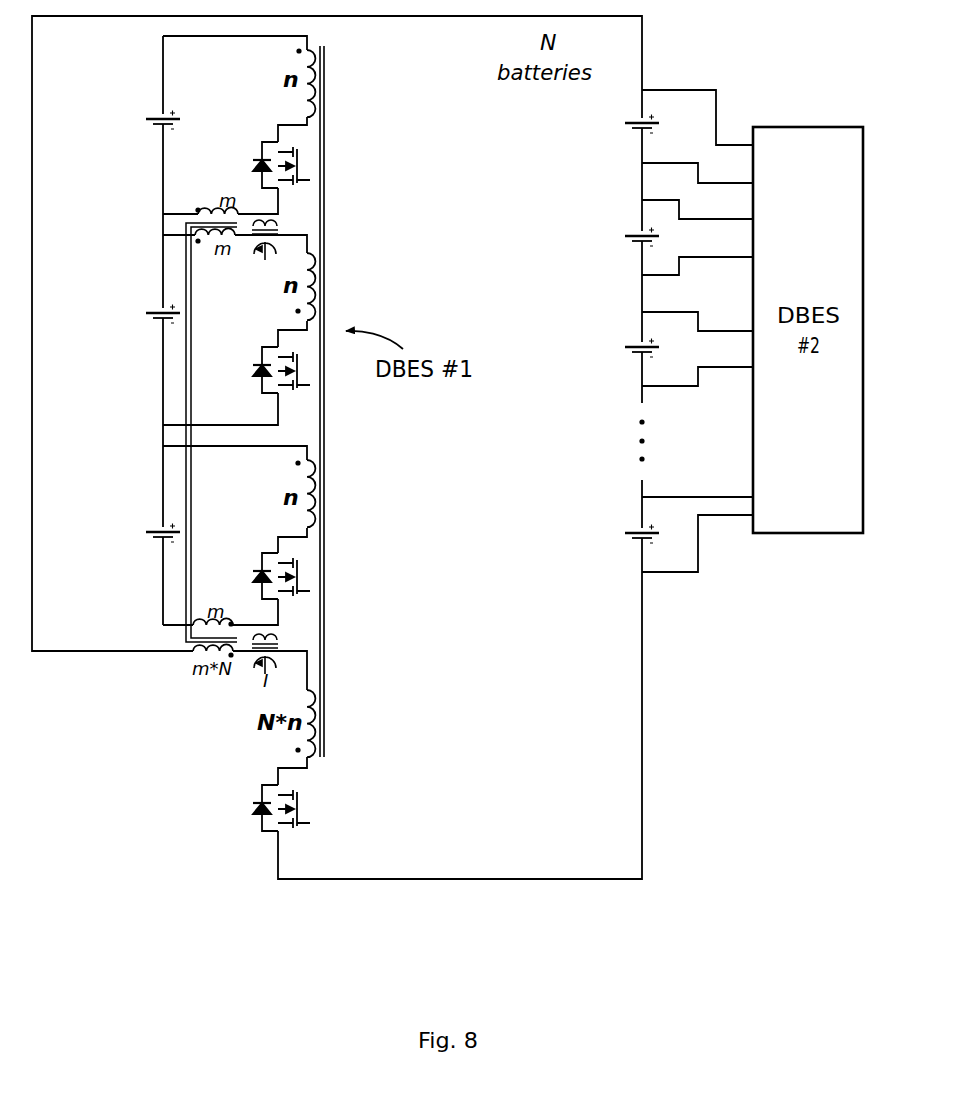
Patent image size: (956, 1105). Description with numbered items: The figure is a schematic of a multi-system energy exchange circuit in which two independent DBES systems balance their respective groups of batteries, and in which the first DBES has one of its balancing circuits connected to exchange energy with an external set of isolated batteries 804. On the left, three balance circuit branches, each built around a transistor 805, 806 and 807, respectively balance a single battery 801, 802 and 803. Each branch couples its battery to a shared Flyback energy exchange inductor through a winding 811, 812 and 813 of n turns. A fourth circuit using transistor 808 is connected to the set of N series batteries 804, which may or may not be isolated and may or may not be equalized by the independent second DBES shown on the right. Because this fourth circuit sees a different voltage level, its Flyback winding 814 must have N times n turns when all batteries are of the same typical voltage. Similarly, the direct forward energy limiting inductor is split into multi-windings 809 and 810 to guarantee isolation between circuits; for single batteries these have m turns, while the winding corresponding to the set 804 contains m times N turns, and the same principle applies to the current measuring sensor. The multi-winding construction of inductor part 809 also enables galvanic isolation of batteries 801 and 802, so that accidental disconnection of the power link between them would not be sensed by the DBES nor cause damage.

The battery 801 is at (140, 118).
The battery 802 is at (140, 312).
The battery 803 is at (140, 531).
The set of isolated batteries 804 is at (606, 162).
The transistor 805 is at (268, 130).
The transistor 806 is at (258, 338).
The transistor 807 is at (268, 545).
The transistor 808 is at (309, 806).
The multi-winding of direct forward energy limiting inductor 809 is at (206, 206).
The multi-winding of direct forward energy limiting inductor 810 is at (216, 606).
The Flyback energy exchange inductor winding 811 is at (327, 80).
The Flyback energy exchange inductor winding 812 is at (331, 275).
The Flyback energy exchange inductor winding 813 is at (331, 479).
The winding 814 is at (268, 747).